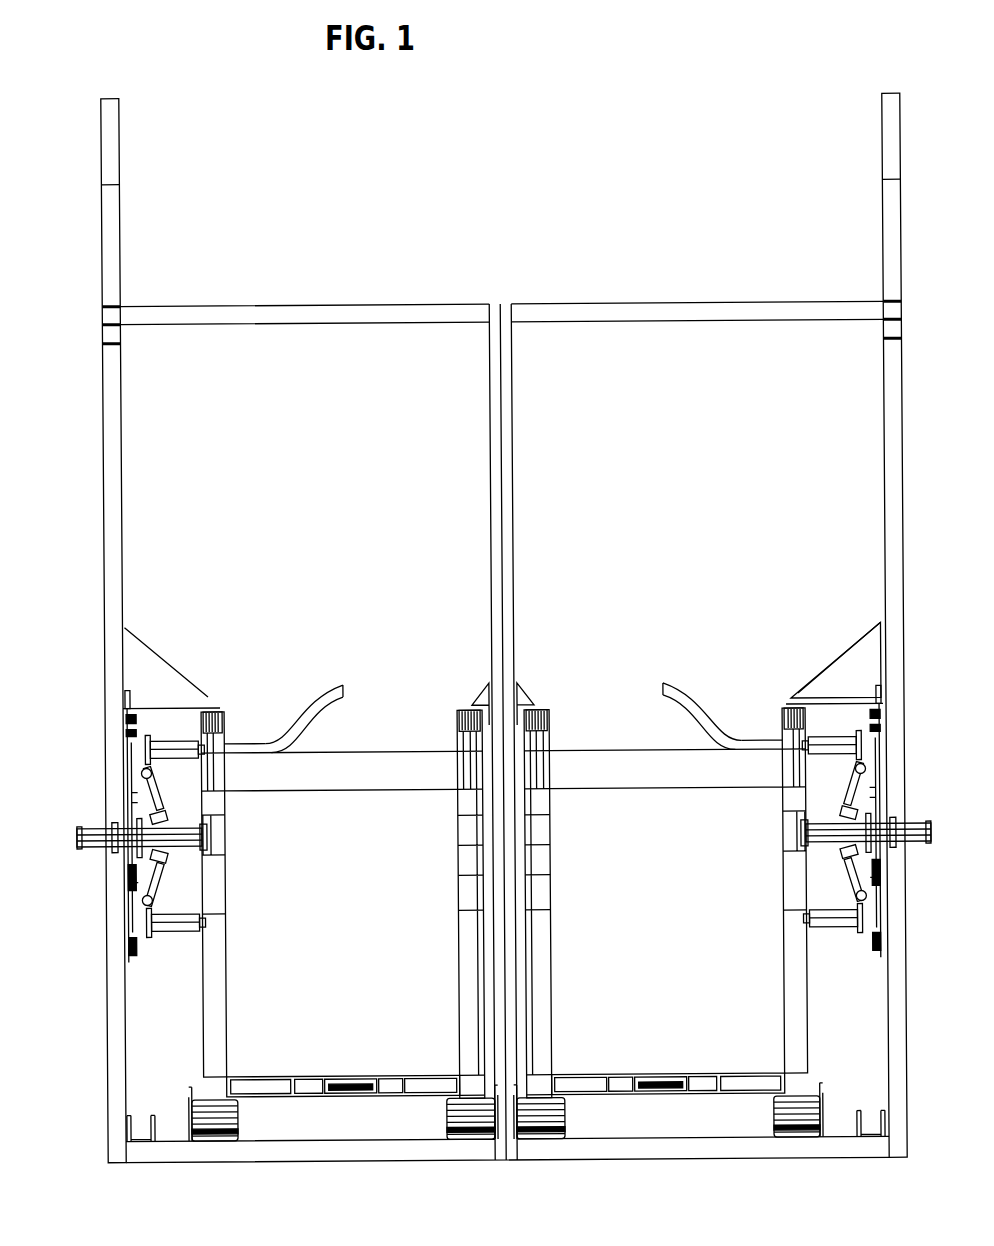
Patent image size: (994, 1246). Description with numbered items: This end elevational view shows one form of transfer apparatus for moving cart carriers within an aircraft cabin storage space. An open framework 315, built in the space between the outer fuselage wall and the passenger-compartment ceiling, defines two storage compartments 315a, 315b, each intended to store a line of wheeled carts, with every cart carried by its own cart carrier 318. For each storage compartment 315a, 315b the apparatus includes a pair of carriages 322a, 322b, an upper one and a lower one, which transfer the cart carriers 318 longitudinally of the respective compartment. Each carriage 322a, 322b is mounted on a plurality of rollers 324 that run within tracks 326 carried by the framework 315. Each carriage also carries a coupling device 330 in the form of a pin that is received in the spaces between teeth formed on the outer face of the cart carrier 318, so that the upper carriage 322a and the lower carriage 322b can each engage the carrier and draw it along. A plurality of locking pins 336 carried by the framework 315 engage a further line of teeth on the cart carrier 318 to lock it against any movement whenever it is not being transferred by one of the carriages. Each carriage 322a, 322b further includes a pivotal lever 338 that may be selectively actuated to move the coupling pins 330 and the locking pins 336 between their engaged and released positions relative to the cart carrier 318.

The framework 315 is at (110, 475).
The storage compartment 315a is at (222, 383).
The storage compartment 315b is at (610, 383).
The cart carrier 318 is at (415, 916).
The rollers 324 is at (125, 720).
The tracks 326 is at (140, 724).
The carriage 322a is at (175, 735).
The carriage 322b is at (140, 900).
The coupling device 330 is at (172, 738).
The pivotal lever 338 is at (165, 808).
The locking pins 336 is at (178, 848).